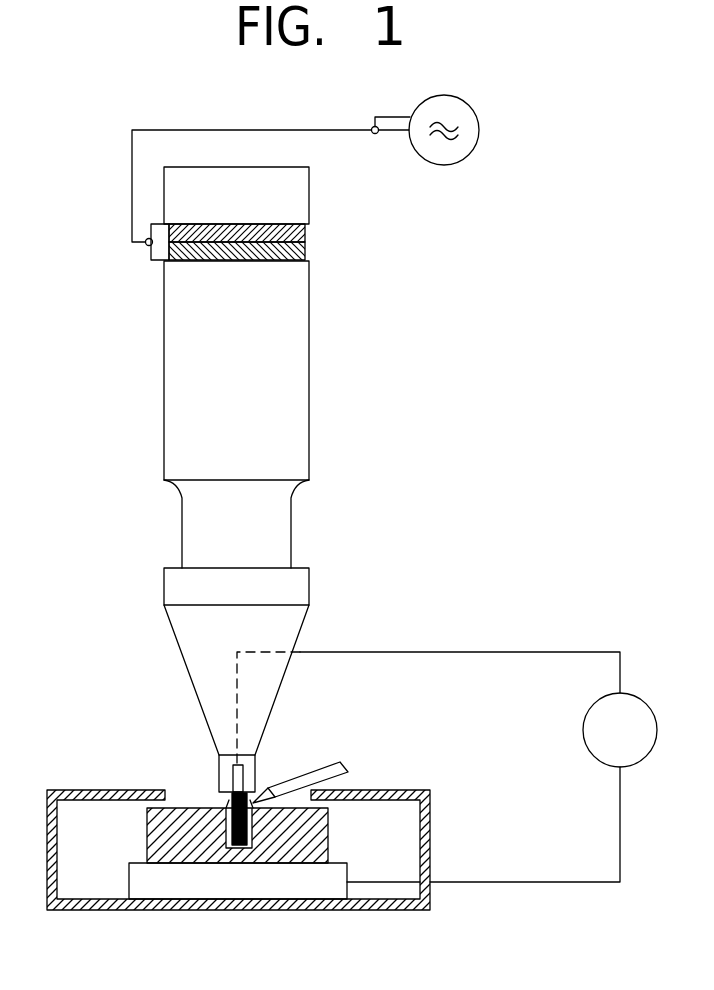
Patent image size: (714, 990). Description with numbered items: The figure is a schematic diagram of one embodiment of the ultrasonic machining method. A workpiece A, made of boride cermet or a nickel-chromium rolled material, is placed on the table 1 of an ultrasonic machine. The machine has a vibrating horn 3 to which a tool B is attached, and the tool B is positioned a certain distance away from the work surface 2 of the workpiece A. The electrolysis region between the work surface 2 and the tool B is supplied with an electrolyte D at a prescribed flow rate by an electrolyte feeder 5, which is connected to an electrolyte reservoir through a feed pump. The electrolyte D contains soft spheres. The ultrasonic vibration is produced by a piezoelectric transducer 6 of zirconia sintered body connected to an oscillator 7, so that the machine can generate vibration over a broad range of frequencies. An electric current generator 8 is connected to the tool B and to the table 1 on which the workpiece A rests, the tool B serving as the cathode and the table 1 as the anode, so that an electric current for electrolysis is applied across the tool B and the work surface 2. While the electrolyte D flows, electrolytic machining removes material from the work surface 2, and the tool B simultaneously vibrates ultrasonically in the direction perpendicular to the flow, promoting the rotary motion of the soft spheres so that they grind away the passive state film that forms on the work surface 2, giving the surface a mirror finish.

The table 1 is at (119, 884).
The work surface 2 is at (222, 866).
The vibrating horn 3 is at (285, 623).
The electrolyte feeder 5 is at (348, 767).
The piezoelectric transducer 6 is at (305, 228).
The oscillator 7 is at (479, 115).
The electric current generator 8 is at (652, 708).
The workpiece A is at (140, 845).
The tool B is at (223, 807).
The electrolyte D is at (252, 806).